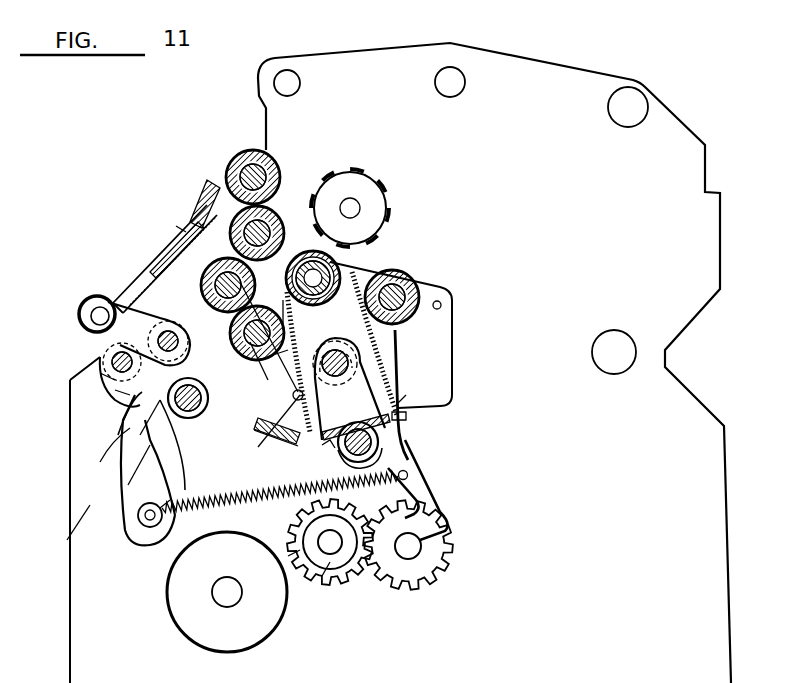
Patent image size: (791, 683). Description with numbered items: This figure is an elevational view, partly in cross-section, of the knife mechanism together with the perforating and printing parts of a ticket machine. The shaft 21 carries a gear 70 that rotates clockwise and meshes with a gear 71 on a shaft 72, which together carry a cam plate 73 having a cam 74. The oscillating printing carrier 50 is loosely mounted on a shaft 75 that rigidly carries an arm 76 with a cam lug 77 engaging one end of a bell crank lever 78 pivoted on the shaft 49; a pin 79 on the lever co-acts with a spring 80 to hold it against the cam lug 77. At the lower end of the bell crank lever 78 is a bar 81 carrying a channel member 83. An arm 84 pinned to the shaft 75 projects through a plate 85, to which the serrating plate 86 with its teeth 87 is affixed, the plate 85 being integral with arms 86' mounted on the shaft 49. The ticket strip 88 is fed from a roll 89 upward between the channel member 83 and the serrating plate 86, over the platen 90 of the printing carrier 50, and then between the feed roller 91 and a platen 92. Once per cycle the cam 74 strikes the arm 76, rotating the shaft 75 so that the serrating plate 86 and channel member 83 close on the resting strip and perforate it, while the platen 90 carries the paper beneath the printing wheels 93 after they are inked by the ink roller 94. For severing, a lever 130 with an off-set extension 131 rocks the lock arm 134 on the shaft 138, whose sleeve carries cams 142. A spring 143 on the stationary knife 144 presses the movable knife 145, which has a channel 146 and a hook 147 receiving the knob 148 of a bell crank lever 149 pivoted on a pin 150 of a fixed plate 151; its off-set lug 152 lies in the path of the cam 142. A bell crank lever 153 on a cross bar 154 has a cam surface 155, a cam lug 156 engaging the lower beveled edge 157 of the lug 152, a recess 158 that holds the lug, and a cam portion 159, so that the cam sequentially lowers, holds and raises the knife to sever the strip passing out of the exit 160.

The shaft 21 is at (408, 559).
The shaft 49 is at (333, 350).
The oscillating printing carrier 50 is at (390, 348).
The gear 70 is at (436, 550).
The gear 71 is at (346, 573).
The shaft 72 is at (322, 552).
The cam plate 73 is at (300, 550).
The cam 74 is at (330, 562).
The shaft 75 is at (399, 478).
The arm 76 is at (432, 500).
The cam lug 77 is at (406, 421).
The bell crank lever 78 is at (398, 405).
The pin 79 is at (293, 393).
The spring 80 is at (375, 385).
The bar 81 is at (272, 436).
The channel member 83 is at (262, 420).
The arm 84 is at (380, 442).
The plate 85 is at (402, 414).
The serrating plate 86 is at (281, 440).
The arms 86' is at (448, 395).
The teeth 87 is at (326, 448).
The ticket strip 88 is at (228, 507).
The roll 89 is at (178, 578).
The platen 90 is at (258, 360).
The feed roller 91 is at (207, 292).
The platen 92 is at (280, 207).
The printing wheels 93 is at (380, 222).
The ink roller 94 is at (318, 262).
The lever 130 is at (129, 481).
The off-set extension 131 is at (118, 435).
The lock arm 134 is at (140, 435).
The shaft 138 is at (190, 420).
The cams 142 is at (246, 353).
The spring 143 is at (142, 257).
The stationary knife 144 is at (206, 200).
The movable knife 145 is at (128, 283).
The channel 146 is at (156, 244).
The hook 147 is at (80, 308).
The knob 148 is at (92, 321).
The bell crank lever 149 is at (182, 350).
The pin 150 is at (250, 342).
The plate 151 is at (186, 458).
The off-set lug 152 is at (145, 502).
The bell crank lever 153 is at (100, 373).
The cross bar 154 is at (104, 361).
The cam surface 155 is at (115, 390).
The cam lug 156 is at (100, 462).
The lower beveled edge 157 is at (128, 485).
The recess 158 is at (67, 540).
The cam portion 159 is at (220, 500).
The exit 160 is at (176, 228).